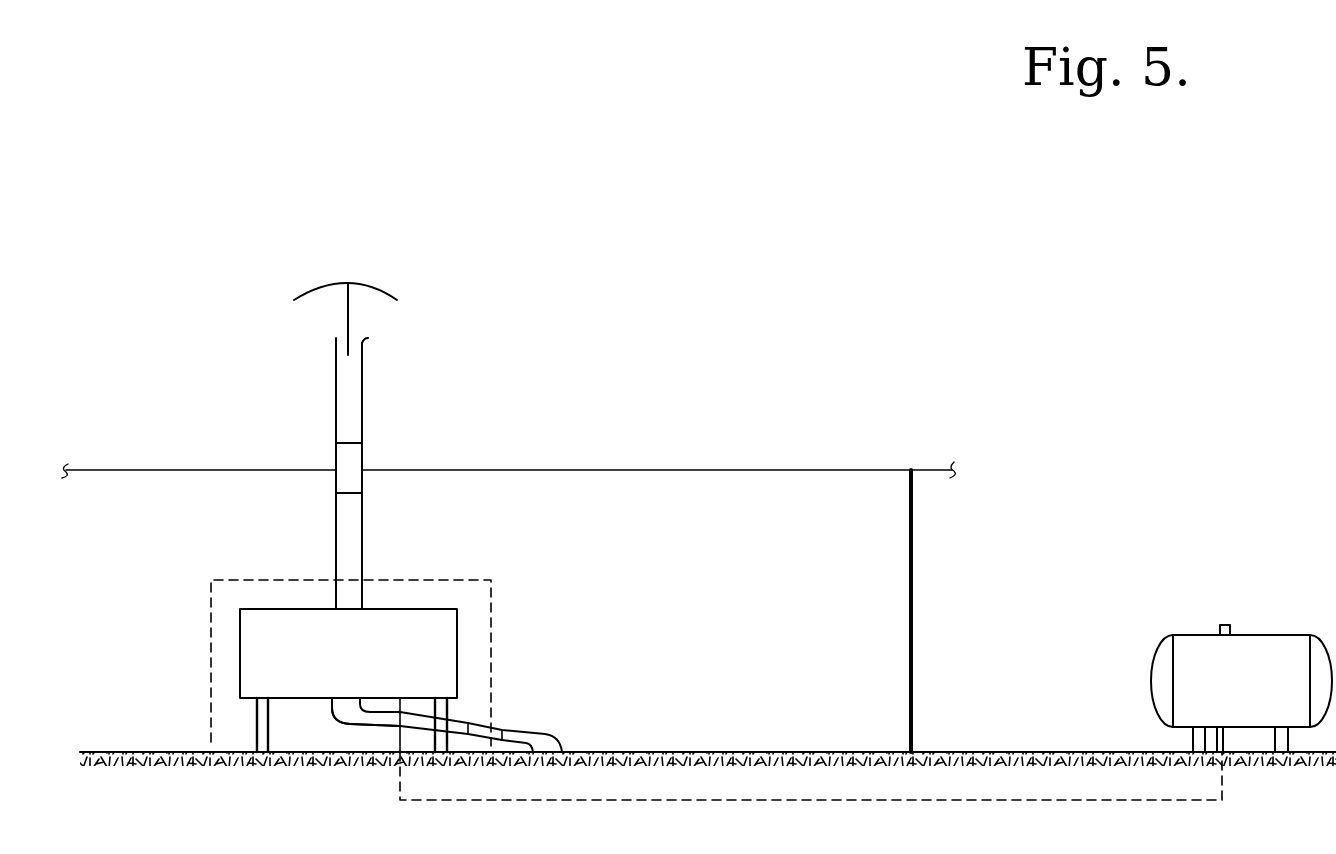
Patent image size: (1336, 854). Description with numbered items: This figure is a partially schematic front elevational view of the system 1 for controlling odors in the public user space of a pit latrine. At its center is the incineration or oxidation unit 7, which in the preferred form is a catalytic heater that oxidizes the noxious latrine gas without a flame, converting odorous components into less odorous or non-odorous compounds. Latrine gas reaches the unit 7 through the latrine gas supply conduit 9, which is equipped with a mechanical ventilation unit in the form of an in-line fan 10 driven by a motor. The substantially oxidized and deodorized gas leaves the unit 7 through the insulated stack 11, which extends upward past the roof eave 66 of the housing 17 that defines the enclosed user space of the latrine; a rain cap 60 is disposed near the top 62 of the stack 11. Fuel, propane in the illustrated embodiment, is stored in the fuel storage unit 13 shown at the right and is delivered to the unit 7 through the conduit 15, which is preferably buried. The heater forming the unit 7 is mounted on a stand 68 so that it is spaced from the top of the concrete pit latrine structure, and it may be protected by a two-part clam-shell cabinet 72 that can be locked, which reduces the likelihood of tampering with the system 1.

The system 1 is at (562, 360).
The incineration or oxidation unit 7 is at (457, 628).
The latrine gas supply conduit 9 is at (362, 727).
The in-line fan 10 is at (512, 730).
The stack 11 is at (362, 536).
The fuel storage unit 13 is at (1252, 633).
The conduit 15 is at (1225, 750).
The housing 17 is at (913, 560).
The rain cap 60 is at (348, 283).
The top 62 is at (378, 314).
The roof eave 66 is at (845, 470).
The stand 68 is at (268, 730).
The cabinet 72 is at (493, 656).